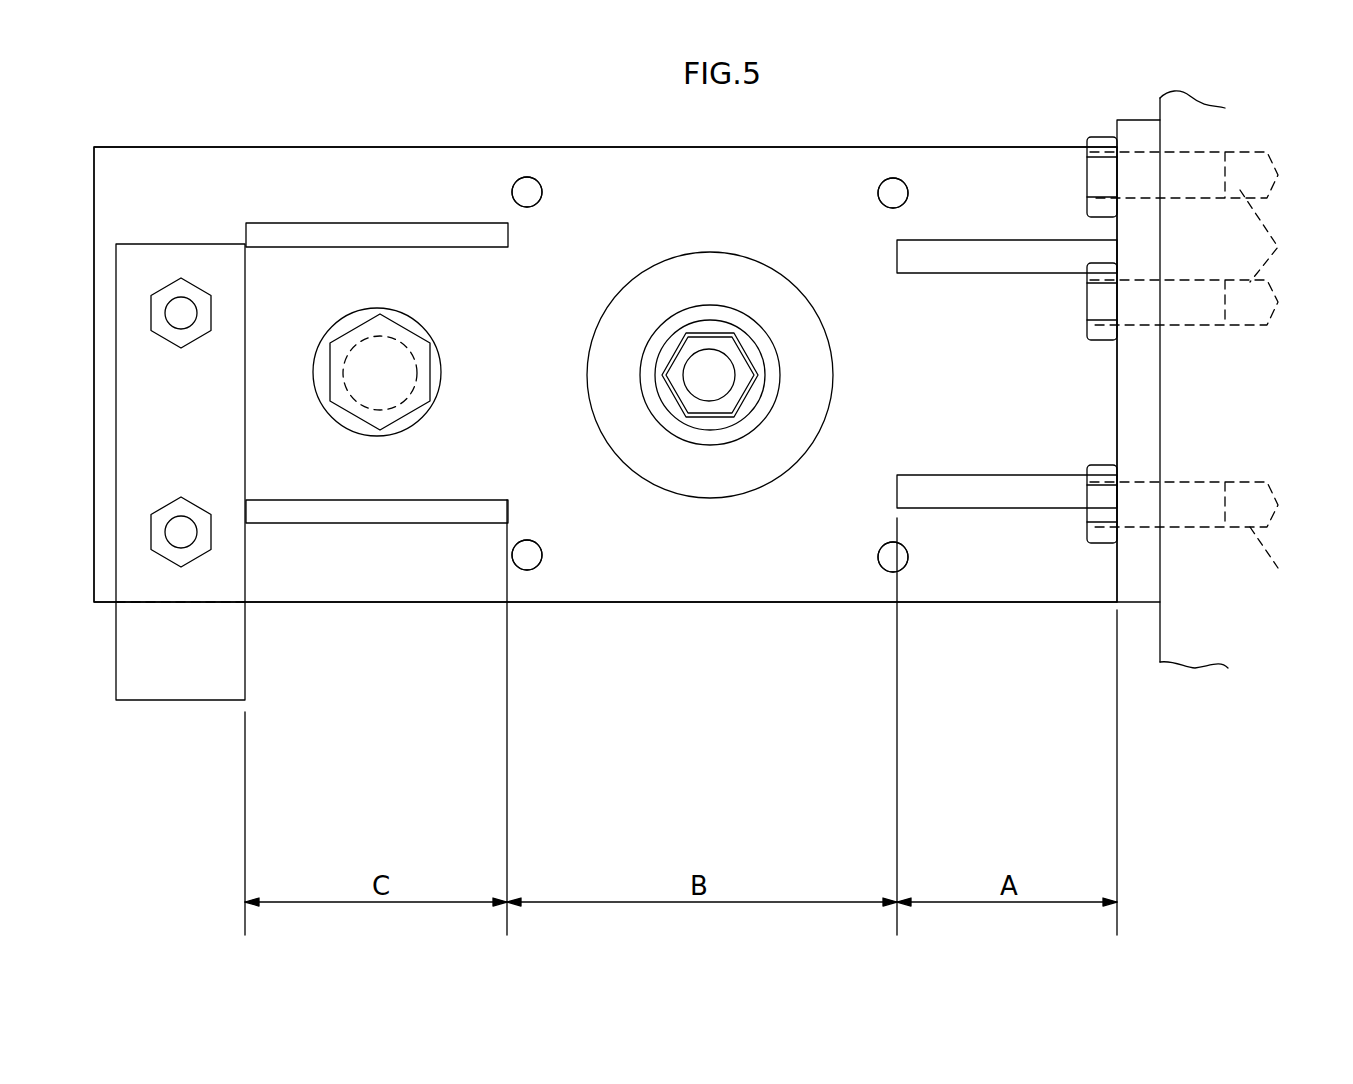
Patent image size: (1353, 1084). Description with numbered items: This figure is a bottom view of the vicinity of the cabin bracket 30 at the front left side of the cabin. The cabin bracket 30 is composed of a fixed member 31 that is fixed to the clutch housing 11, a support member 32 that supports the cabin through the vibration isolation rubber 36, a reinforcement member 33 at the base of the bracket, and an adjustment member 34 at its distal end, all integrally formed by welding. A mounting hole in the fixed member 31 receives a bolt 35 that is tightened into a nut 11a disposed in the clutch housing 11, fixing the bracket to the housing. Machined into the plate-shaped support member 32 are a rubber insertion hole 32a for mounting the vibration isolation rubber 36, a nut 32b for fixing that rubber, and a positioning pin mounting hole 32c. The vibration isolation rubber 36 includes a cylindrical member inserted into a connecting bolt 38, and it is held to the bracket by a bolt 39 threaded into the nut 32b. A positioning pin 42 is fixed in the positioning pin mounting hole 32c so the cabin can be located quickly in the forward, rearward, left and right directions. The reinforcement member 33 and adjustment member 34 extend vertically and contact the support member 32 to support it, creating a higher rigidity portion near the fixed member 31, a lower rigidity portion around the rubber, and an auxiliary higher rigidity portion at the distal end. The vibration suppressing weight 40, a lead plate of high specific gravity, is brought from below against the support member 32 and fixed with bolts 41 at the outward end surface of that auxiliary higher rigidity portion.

The clutch housing 11 is at (1195, 640).
The nut 11a is at (1285, 400).
The cabin bracket 30 is at (434, 145).
The fixed member 31 is at (1140, 397).
The support member 32 is at (953, 603).
The rubber insertion hole 32a is at (624, 455).
The nut 32b is at (528, 180).
The positioning pin mounting hole 32c is at (337, 418).
The reinforcement member 33 is at (990, 252).
The adjustment member 34 is at (318, 238).
The bolt 35 is at (1097, 180).
The vibration isolation rubber 36 is at (752, 457).
The connecting bolt 38 is at (705, 366).
The bolt 39 is at (527, 192).
The vibration suppressing weight 40 is at (165, 676).
The bolt 41 is at (181, 313).
The positioning pin 42 is at (424, 367).